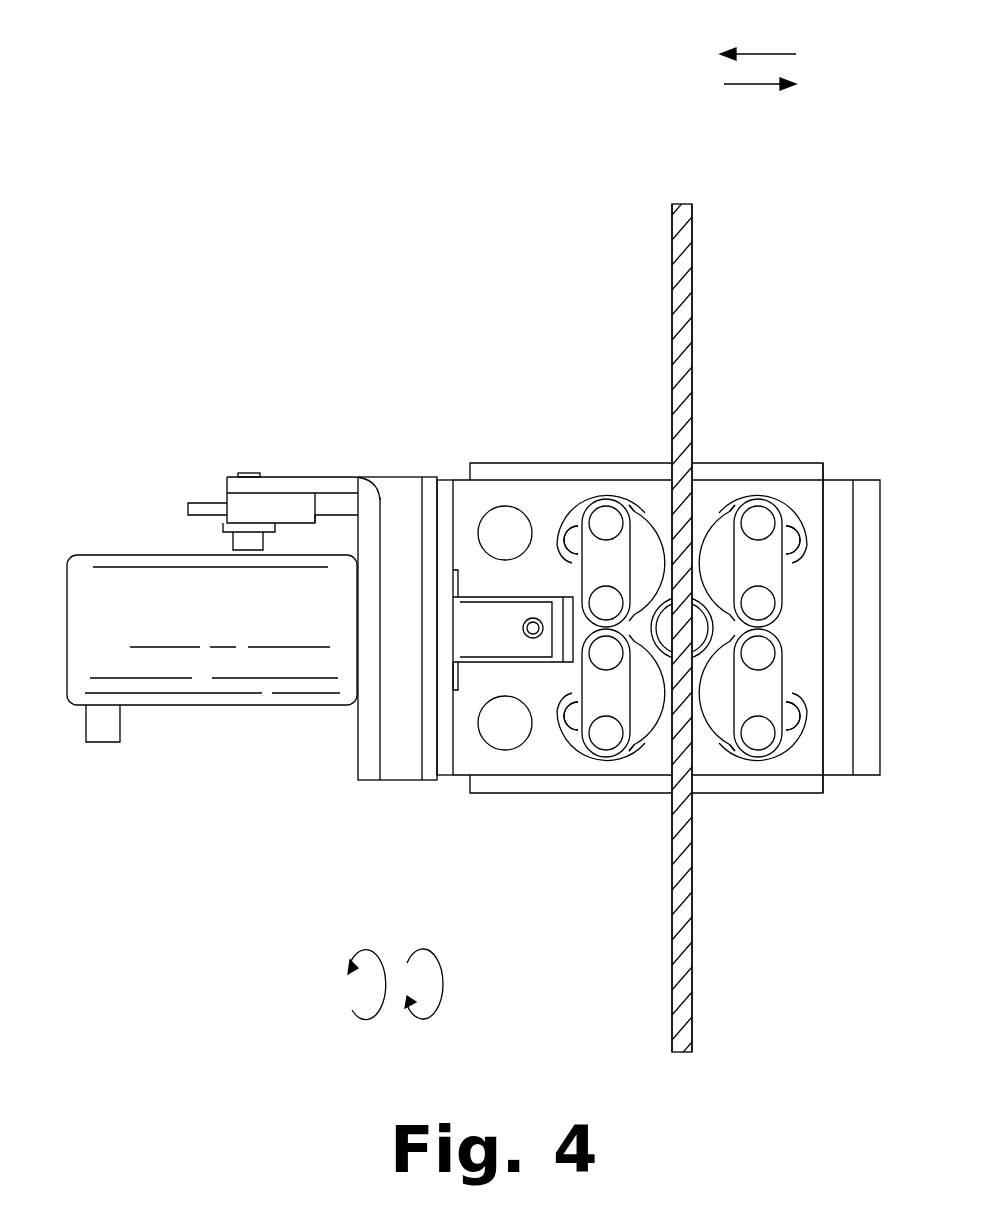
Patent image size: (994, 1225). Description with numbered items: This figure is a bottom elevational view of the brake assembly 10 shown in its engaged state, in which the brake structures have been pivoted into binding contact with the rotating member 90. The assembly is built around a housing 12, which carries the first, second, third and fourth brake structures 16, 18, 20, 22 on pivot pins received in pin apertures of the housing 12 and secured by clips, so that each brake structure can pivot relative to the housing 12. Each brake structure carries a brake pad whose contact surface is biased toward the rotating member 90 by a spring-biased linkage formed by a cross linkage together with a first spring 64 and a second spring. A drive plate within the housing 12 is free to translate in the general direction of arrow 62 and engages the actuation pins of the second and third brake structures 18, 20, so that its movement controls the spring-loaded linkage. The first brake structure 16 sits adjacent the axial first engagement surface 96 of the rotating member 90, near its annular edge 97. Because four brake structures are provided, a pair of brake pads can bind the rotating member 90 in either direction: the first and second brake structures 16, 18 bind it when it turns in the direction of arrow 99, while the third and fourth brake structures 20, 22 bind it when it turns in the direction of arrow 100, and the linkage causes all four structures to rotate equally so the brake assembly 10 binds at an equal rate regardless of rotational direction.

The brake assembly 10 is at (352, 207).
The housing 12 is at (405, 493).
The first brake structure 16 is at (757, 470).
The second brake structure 18 is at (591, 483).
The third brake structure 20 is at (591, 792).
The fourth brake structure 22 is at (766, 794).
The arrow 62 is at (724, 84).
The first spring 64 is at (796, 54).
The rotating member 90 is at (706, 990).
The first engagement surface 96 is at (693, 344).
The annular edge 97 is at (674, 287).
The arrow 99 is at (440, 967).
The arrow 100 is at (352, 1010).